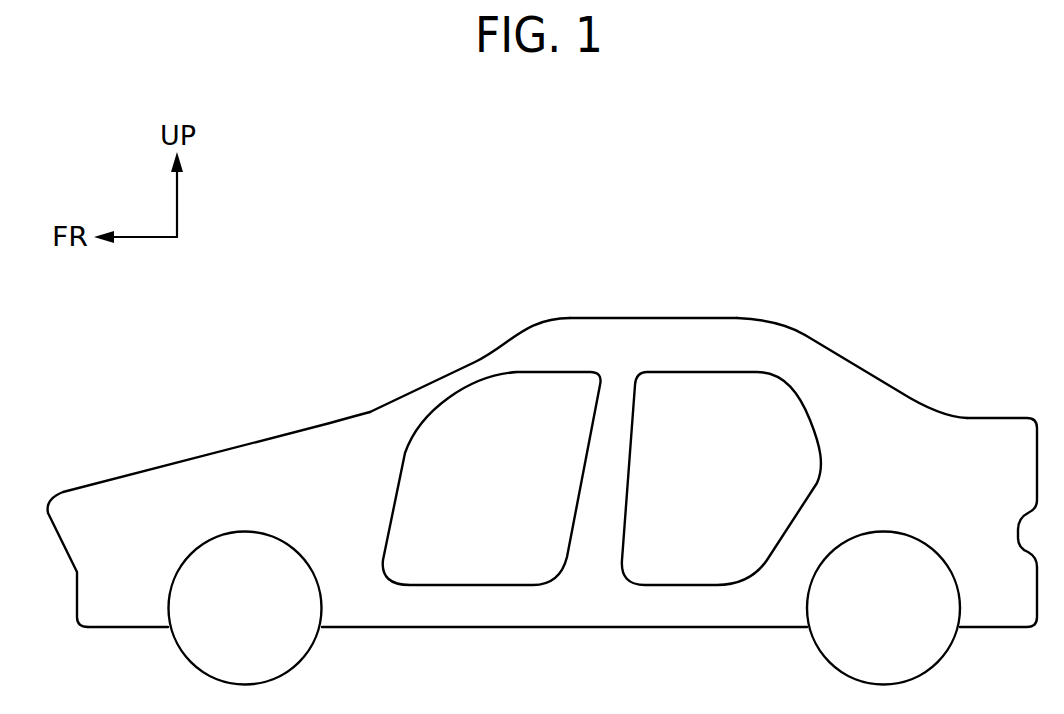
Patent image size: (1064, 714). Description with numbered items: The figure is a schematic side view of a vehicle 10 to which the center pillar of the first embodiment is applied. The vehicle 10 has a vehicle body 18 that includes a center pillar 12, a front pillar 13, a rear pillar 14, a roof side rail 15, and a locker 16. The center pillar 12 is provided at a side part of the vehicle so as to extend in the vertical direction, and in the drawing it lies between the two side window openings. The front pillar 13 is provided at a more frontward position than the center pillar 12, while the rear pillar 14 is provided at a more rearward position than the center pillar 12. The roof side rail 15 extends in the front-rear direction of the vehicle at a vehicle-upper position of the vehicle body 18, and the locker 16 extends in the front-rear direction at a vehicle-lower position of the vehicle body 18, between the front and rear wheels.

The vehicle 10 is at (884, 224).
The center pillar 12 is at (620, 477).
The front pillar 13 is at (463, 366).
The rear pillar 14 is at (828, 358).
The roof side rail 15 is at (685, 332).
The locker 16 is at (497, 613).
The vehicle body 18 is at (773, 323).